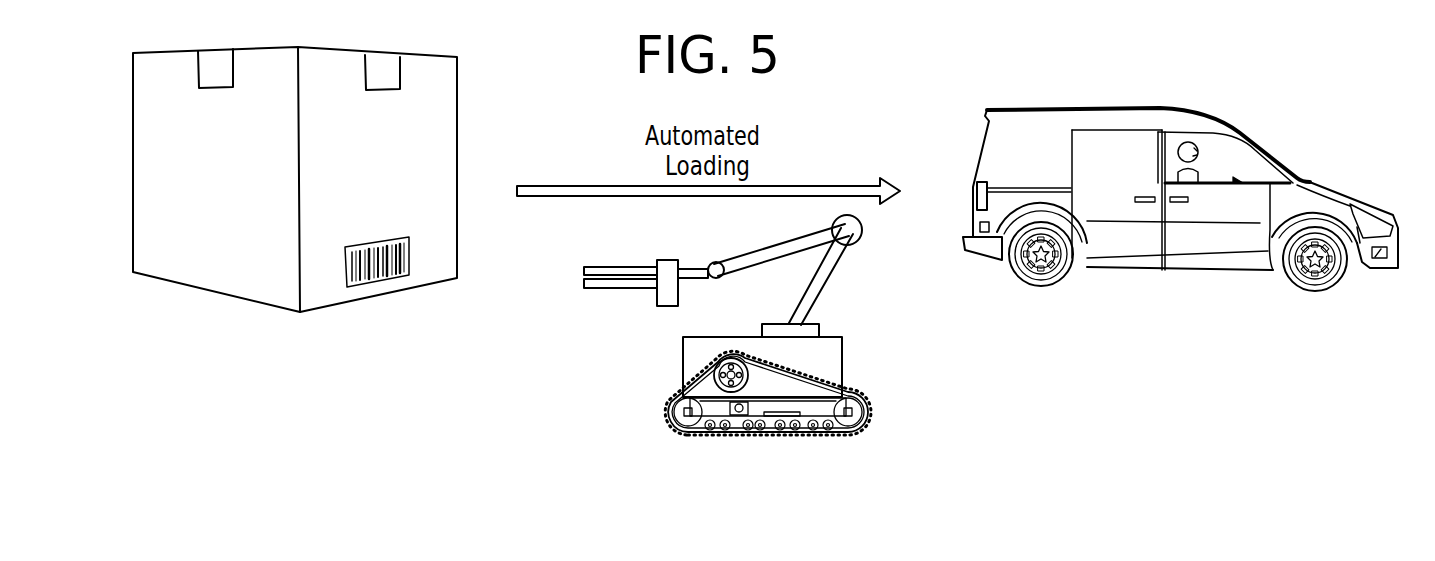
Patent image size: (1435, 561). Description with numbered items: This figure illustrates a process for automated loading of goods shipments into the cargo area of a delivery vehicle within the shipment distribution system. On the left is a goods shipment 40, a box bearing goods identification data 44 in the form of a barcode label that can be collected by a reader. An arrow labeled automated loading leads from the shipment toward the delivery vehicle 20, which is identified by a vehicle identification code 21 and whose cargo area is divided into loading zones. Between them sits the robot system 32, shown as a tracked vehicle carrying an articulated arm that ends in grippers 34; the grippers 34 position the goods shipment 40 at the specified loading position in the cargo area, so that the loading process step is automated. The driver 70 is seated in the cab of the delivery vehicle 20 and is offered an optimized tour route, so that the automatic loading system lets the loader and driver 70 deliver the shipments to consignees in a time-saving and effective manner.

The delivery vehicle 20 is at (1165, 108).
The vehicle identification code 21 is at (972, 221).
The robot system 32 is at (842, 362).
The grippers 34 is at (619, 300).
The goods shipment 40 is at (442, 110).
The goods identification data 44 is at (358, 286).
The driver 70 is at (1200, 158).